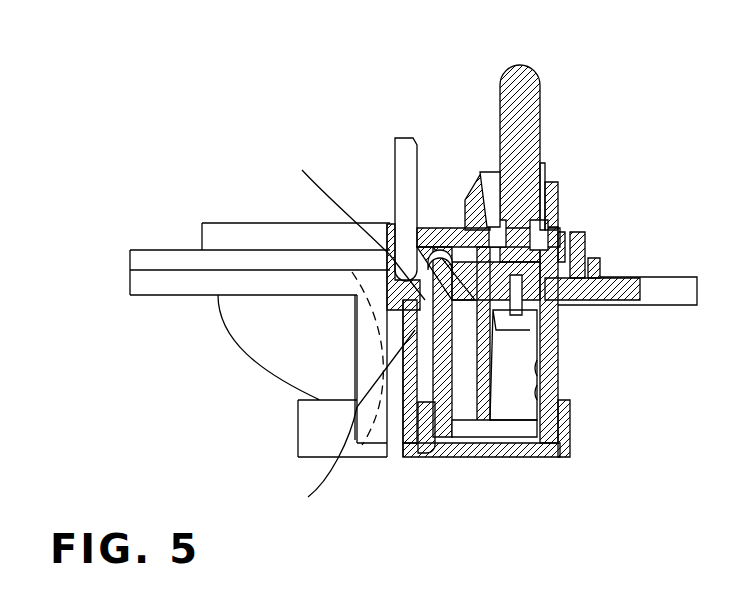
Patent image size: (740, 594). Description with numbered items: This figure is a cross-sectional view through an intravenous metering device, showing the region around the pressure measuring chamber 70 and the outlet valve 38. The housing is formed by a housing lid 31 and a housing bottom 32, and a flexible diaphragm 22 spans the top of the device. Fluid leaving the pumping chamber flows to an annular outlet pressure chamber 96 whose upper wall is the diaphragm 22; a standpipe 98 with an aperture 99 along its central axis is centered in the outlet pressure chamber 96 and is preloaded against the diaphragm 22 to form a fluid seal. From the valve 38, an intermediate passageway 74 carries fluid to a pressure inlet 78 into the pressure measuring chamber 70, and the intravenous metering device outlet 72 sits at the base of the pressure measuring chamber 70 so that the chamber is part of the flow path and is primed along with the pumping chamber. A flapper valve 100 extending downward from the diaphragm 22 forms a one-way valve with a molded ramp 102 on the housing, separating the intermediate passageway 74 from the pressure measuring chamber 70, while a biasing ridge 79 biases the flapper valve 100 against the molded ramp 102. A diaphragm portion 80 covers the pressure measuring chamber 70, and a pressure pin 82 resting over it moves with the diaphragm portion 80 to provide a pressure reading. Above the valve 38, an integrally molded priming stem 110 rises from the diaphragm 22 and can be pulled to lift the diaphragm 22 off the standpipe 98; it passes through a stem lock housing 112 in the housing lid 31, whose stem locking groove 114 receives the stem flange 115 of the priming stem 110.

The flexible diaphragm 22 is at (459, 230).
The housing lid 31 is at (600, 247).
The housing bottom 32 is at (560, 455).
The valve 38 is at (588, 235).
The pressure measuring chamber 70 is at (392, 310).
The intravenous metering device outlet 72 is at (393, 440).
The intermediate passageway 74 is at (462, 395).
The pressure inlet 78 is at (556, 348).
The biasing ridge 79 is at (430, 230).
The diaphragm portion 80 is at (351, 221).
The pressure pin 82 is at (397, 173).
The annular outlet pressure chamber 96 is at (563, 228).
The standpipe 98 is at (565, 305).
The aperture 99 is at (556, 390).
The flapper valve 100 is at (390, 347).
The molded ramp 102 is at (336, 420).
The priming stem 110 is at (535, 118).
The stem lock housing 112 is at (556, 180).
The stem locking groove 114 is at (478, 165).
The stem flange 115 is at (492, 170).